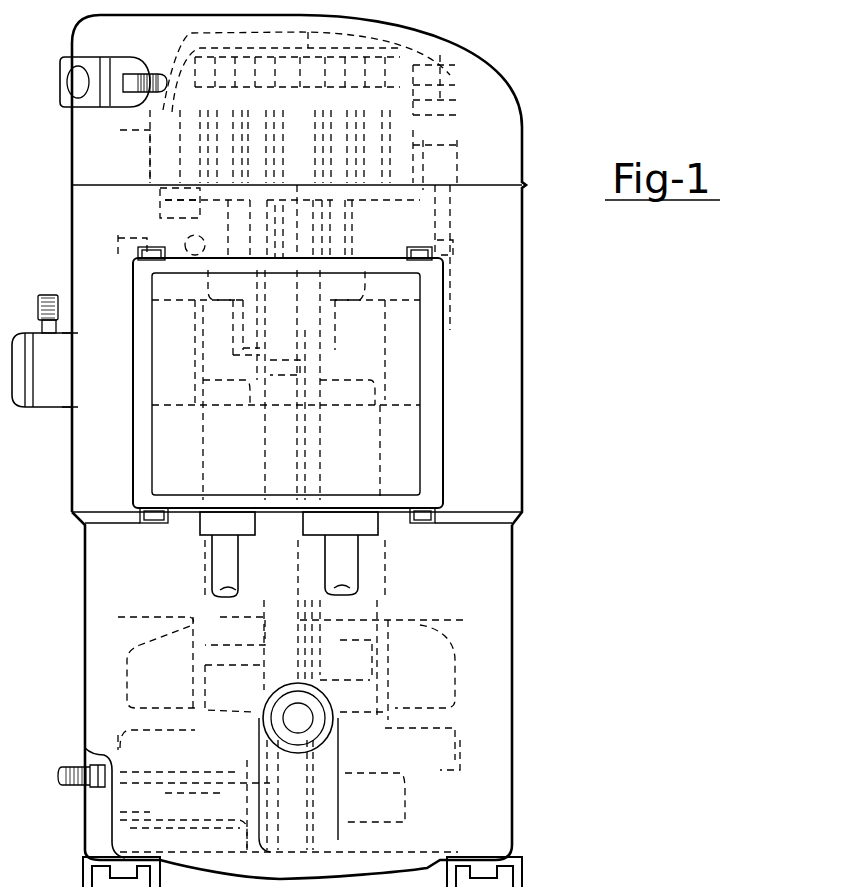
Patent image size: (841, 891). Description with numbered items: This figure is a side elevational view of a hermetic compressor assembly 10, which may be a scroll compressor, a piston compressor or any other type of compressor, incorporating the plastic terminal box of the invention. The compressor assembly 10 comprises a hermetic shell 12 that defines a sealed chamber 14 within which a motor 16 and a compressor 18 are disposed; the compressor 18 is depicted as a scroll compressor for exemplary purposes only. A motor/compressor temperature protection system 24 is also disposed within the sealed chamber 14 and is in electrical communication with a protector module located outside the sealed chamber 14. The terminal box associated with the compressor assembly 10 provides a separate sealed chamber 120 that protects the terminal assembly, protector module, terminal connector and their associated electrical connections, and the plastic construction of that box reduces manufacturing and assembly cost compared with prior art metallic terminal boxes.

The hermetic compressor assembly 10 is at (548, 64).
The hermetic shell 12 is at (522, 387).
The sealed chamber 14 is at (490, 575).
The motor 16 is at (440, 660).
The compressor 18 is at (455, 160).
The motor/compressor temperature protection system 24 is at (400, 290).
The sealed chamber 120 is at (410, 462).